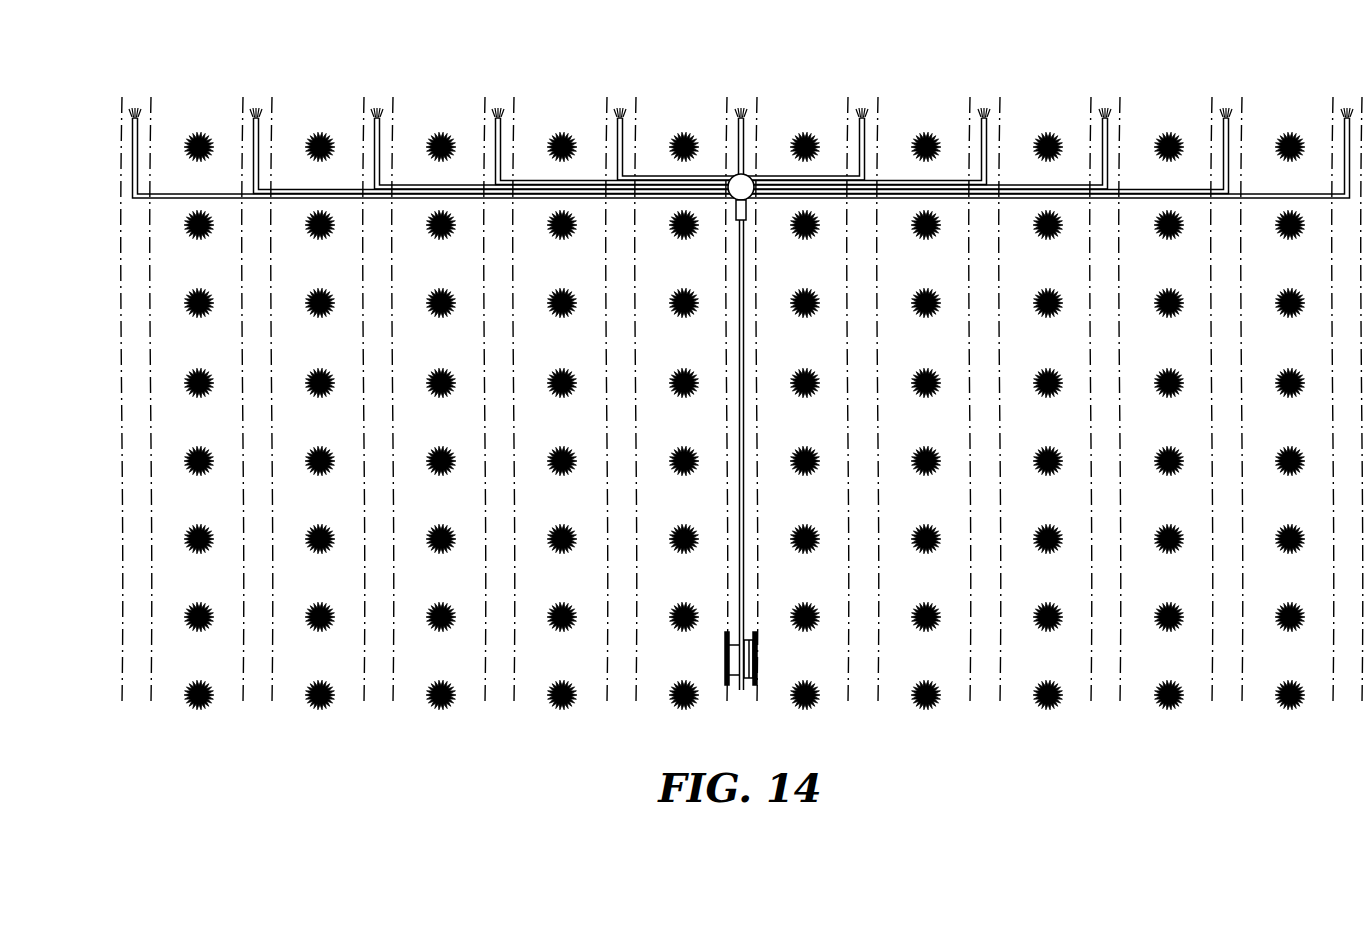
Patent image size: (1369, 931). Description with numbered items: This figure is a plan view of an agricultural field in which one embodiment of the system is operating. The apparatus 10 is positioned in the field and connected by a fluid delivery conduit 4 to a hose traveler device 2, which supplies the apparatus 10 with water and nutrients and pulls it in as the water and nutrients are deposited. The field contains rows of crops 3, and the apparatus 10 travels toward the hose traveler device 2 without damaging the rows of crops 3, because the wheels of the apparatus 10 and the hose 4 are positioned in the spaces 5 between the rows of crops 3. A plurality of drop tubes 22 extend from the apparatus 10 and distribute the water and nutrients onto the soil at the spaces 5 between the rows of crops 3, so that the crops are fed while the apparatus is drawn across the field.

The hose traveler device 2 is at (760, 661).
The rows of crops 3 is at (405, 729).
The fluid delivery conduit 4 is at (744, 348).
The spaces 5 is at (254, 692).
The apparatus 10 is at (760, 167).
The drop tubes 22 is at (382, 153).